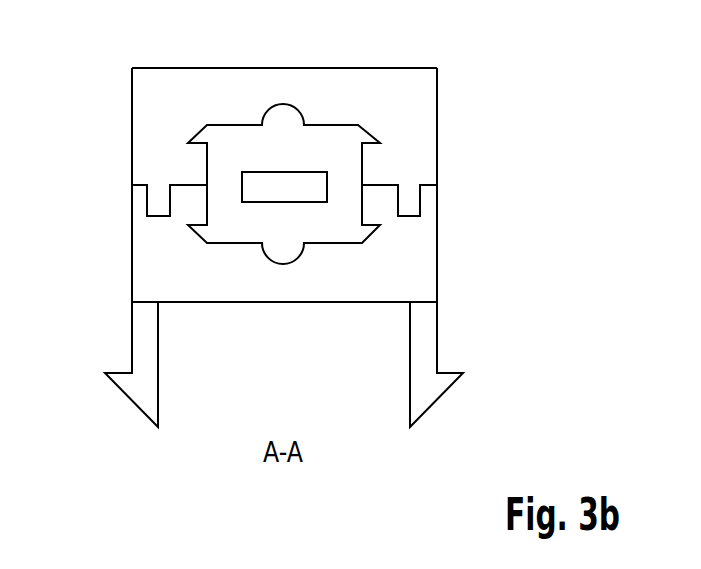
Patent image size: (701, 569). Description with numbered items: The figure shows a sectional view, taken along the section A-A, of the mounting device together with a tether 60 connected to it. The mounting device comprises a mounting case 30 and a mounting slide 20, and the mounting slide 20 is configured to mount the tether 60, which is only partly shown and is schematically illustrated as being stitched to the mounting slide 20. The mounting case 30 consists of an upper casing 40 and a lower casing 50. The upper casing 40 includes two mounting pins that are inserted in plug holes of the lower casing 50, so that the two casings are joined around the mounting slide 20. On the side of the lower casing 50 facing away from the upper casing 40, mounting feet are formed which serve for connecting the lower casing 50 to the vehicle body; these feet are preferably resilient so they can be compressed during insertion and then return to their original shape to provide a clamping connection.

The mounting slide 20 is at (339, 140).
The mounting case 30 is at (132, 118).
The upper casing 40 is at (423, 125).
The lower casing 50 is at (423, 258).
The tether 60 is at (250, 188).